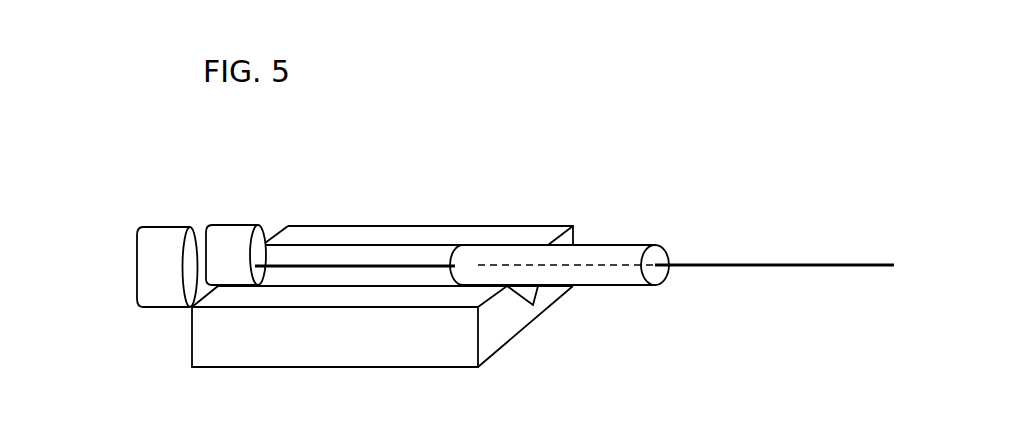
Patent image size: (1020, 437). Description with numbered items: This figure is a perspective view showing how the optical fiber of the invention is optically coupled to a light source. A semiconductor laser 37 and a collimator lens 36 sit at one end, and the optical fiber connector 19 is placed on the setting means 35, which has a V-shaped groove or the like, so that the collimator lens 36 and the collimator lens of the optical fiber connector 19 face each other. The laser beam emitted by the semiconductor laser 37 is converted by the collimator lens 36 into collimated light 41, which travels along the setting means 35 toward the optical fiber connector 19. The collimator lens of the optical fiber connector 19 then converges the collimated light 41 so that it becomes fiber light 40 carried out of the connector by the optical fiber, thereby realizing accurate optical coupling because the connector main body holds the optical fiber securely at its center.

The optical fiber connector 19 is at (610, 230).
The setting means 35 is at (497, 237).
The collimator lens 36 is at (235, 230).
The semiconductor laser 37 is at (165, 232).
The fiber light 40 is at (746, 262).
The collimated light 41 is at (382, 263).